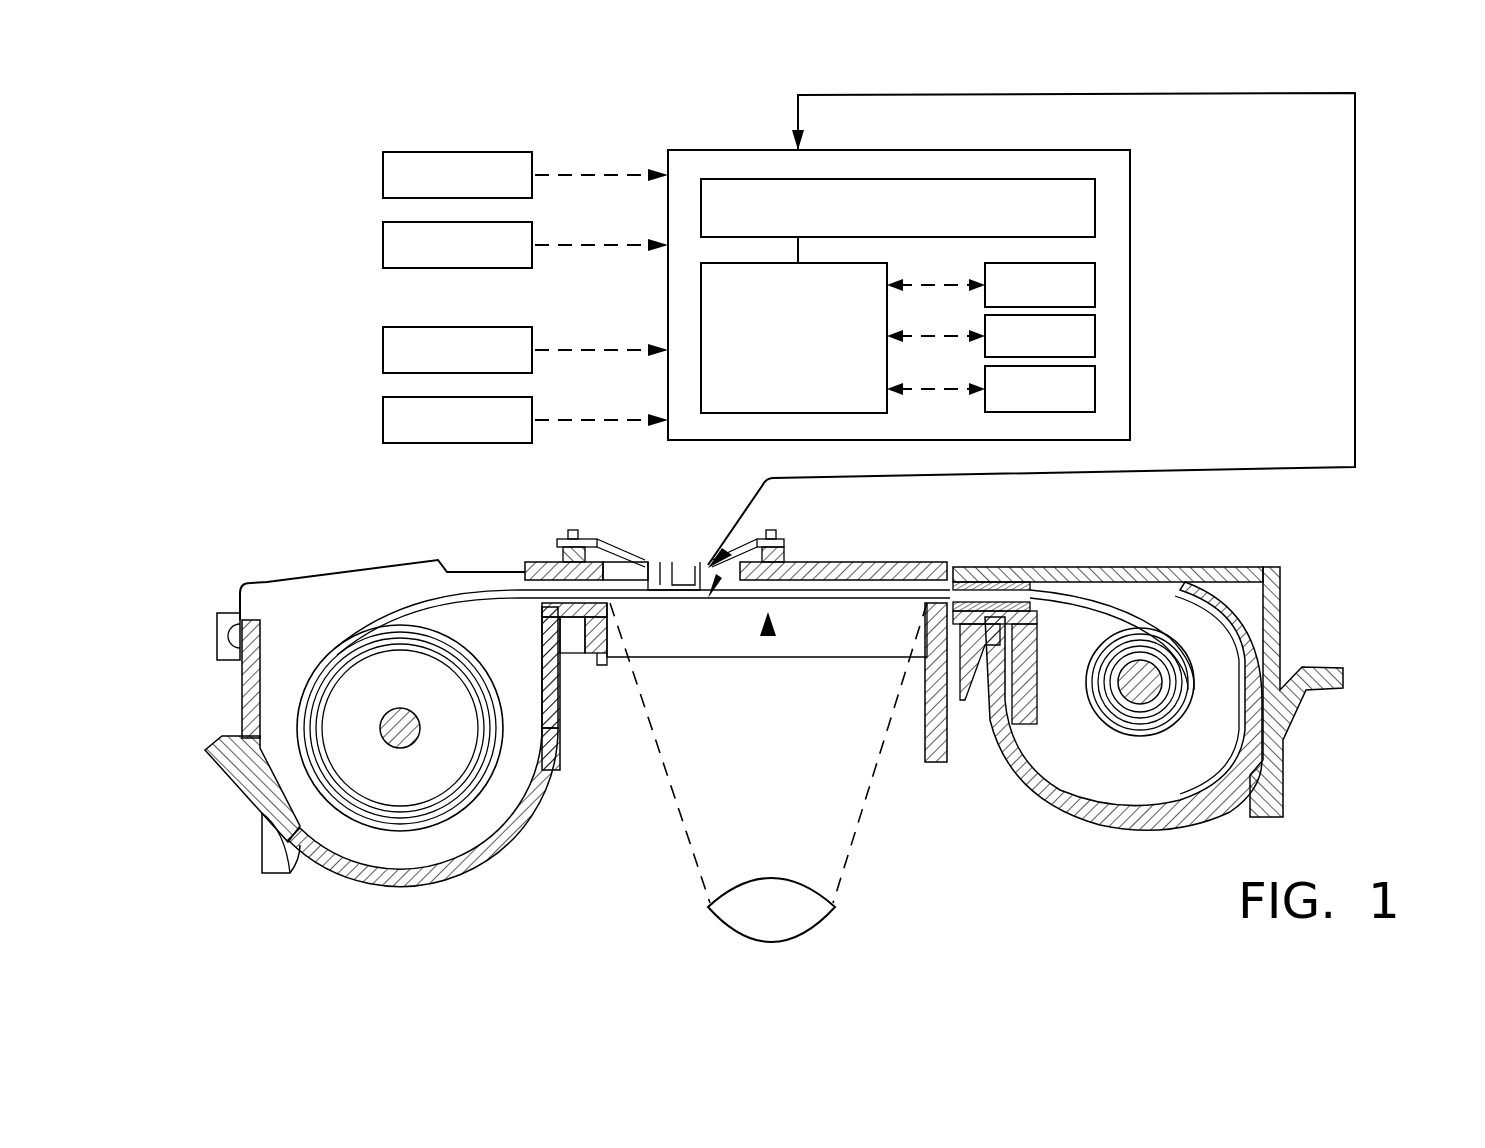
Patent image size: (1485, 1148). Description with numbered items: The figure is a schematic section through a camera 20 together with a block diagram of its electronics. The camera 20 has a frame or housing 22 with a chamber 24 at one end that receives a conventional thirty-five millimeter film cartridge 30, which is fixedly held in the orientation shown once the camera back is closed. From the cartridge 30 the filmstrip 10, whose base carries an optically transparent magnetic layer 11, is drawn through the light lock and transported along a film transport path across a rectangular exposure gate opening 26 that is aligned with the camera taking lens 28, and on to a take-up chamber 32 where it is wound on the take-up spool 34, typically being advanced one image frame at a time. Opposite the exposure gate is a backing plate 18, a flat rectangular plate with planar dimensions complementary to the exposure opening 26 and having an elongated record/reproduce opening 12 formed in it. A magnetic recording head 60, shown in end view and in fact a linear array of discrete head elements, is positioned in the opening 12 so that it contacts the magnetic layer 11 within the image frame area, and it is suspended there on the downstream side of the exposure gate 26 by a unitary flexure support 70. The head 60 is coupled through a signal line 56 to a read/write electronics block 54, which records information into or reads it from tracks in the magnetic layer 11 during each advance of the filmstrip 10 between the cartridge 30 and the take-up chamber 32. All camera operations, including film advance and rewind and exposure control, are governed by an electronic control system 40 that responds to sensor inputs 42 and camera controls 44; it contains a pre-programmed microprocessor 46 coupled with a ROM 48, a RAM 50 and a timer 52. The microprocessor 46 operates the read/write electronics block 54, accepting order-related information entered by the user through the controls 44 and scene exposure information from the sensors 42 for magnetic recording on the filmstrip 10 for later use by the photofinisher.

The filmstrip 10 is at (862, 601).
The magnetic layer 11 is at (512, 600).
The record/reproduce opening 12 is at (705, 600).
The backing plate 18 is at (900, 562).
The camera 20 is at (272, 515).
The frame or housing 22 is at (1156, 670).
The chamber 24 is at (1075, 738).
The exposure gate opening 26 is at (768, 636).
The taking lens 28 is at (770, 886).
The film cartridge 30 is at (1185, 574).
The take-up chamber 32 is at (474, 800).
The take-up spool 34 is at (352, 684).
The electronic control system 40 is at (672, 112).
The sensor inputs 42 is at (383, 175).
The camera controls 44 is at (383, 350).
The microprocessor 46 is at (775, 397).
The ROM 48 is at (1095, 285).
The RAM 50 is at (1095, 336).
The timer 52 is at (1095, 390).
The read/write electronics block 54 is at (1095, 208).
The signal line 56 is at (1355, 290).
The magnetic recording head 60 is at (680, 592).
The unitary flexure support 70 is at (600, 543).